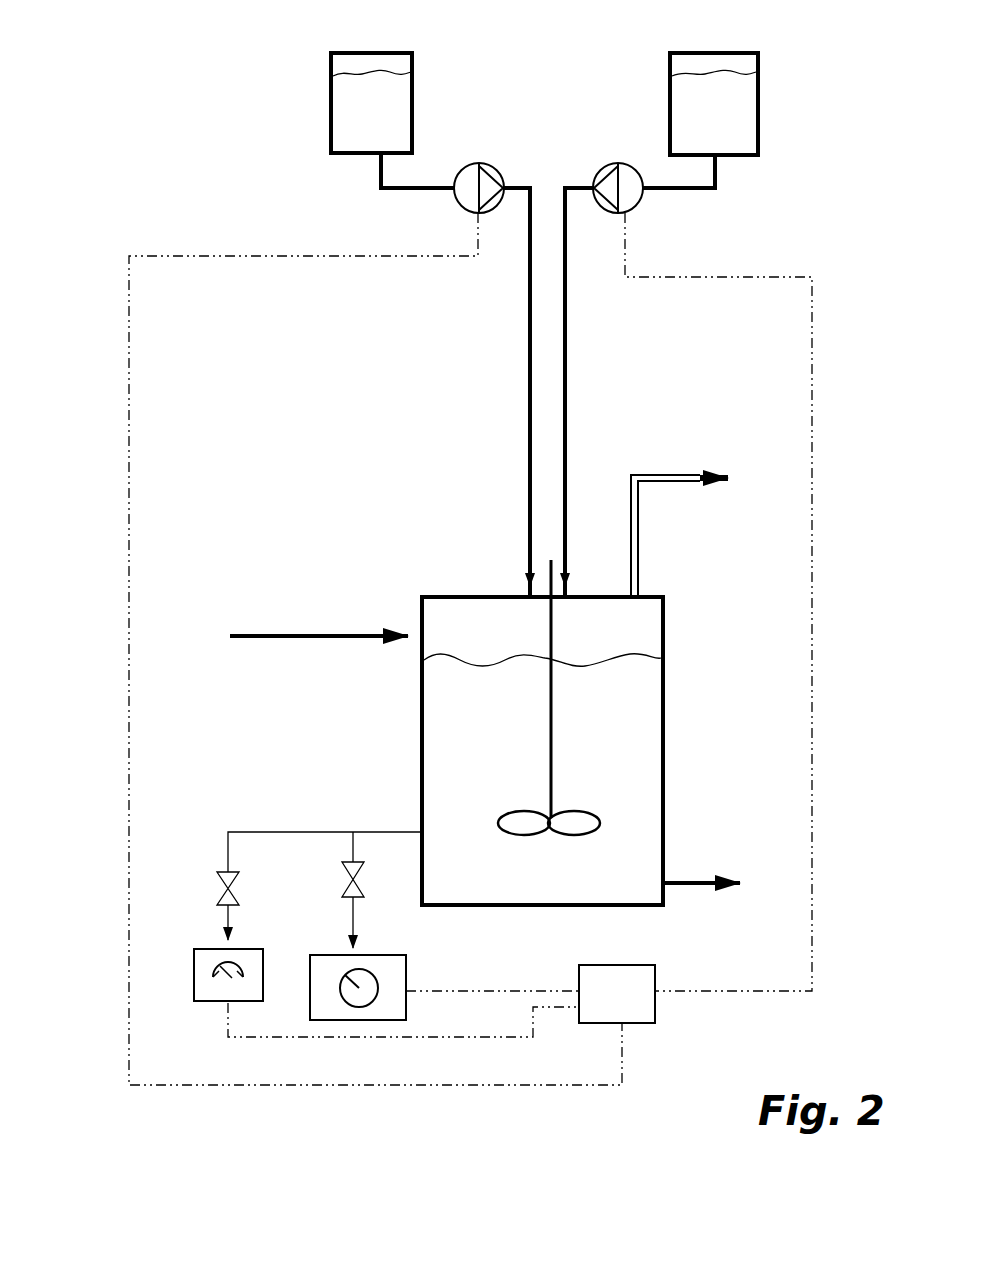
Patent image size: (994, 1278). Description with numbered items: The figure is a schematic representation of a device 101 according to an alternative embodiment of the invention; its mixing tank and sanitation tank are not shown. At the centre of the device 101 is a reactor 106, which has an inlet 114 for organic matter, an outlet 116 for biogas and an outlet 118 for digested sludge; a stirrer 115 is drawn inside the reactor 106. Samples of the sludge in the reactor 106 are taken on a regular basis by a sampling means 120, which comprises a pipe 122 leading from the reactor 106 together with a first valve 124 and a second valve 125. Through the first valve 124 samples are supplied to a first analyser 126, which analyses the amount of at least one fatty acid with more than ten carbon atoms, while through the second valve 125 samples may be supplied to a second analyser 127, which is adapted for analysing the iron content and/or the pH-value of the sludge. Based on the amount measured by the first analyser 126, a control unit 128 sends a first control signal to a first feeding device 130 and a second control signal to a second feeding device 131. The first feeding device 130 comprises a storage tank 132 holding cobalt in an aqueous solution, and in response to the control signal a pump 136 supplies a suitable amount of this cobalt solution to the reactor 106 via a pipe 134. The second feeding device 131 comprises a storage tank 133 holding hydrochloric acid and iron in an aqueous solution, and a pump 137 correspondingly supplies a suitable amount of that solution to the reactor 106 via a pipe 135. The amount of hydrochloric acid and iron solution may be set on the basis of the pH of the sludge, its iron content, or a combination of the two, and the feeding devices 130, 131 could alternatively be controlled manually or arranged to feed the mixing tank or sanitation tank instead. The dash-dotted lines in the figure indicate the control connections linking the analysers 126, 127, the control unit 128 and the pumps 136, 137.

The device 101 is at (163, 82).
The reactor 106 is at (666, 708).
The inlet 114 is at (318, 632).
The stirrer 115 is at (548, 640).
The outlet 116 is at (640, 538).
The outlet 118 is at (710, 878).
The sampling means 120 is at (256, 794).
The pipe 122 is at (385, 832).
The first valve 124 is at (360, 895).
The second valve 125 is at (222, 888).
The first analyser 126 is at (403, 975).
The second analyser 127 is at (194, 985).
The control unit 128 is at (655, 975).
The first feeding device 130 is at (655, 122).
The second feeding device 131 is at (427, 120).
The storage tank 132 is at (760, 95).
The storage tank 133 is at (331, 123).
The pipe 134 is at (565, 340).
The pipe 135 is at (528, 398).
The pump 136 is at (600, 168).
The pump 137 is at (455, 210).